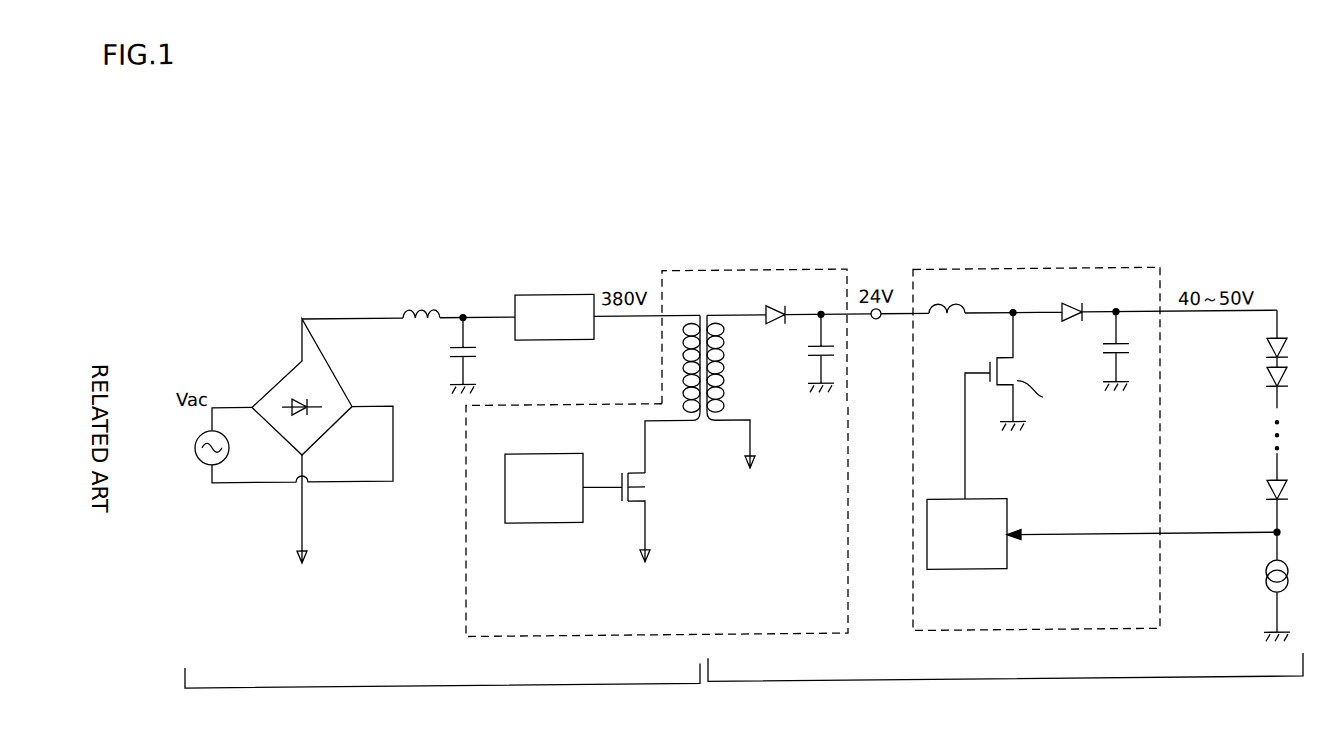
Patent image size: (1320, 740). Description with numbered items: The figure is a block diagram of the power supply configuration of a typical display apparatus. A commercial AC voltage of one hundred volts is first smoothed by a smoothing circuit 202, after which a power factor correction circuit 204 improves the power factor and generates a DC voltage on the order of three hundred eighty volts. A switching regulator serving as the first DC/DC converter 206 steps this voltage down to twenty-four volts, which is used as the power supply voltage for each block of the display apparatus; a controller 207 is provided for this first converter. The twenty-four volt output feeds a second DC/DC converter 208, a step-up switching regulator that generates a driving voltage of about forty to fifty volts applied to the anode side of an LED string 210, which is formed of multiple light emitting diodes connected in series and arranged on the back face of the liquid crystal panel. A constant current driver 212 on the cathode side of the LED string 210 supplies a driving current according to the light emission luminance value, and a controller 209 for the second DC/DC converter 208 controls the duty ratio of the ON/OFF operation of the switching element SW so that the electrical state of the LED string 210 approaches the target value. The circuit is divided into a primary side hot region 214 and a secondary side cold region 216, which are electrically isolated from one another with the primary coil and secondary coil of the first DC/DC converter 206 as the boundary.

The smoothing circuit 202 is at (328, 385).
The power factor correction (PFC) circuit 204 is at (544, 297).
The switching regulator (first DC/DC converter) 206 is at (737, 274).
The controller for the first DC/DC converter 207 is at (568, 456).
The second DC/DC converter 208 is at (997, 275).
The controller for the second DC/DC converter 209 is at (978, 575).
The LED string 210 is at (1253, 342).
The constant current driver 212 is at (1266, 591).
The primary side region (hot region) 214 is at (442, 686).
The secondary side region (cold region) 216 is at (1005, 680).